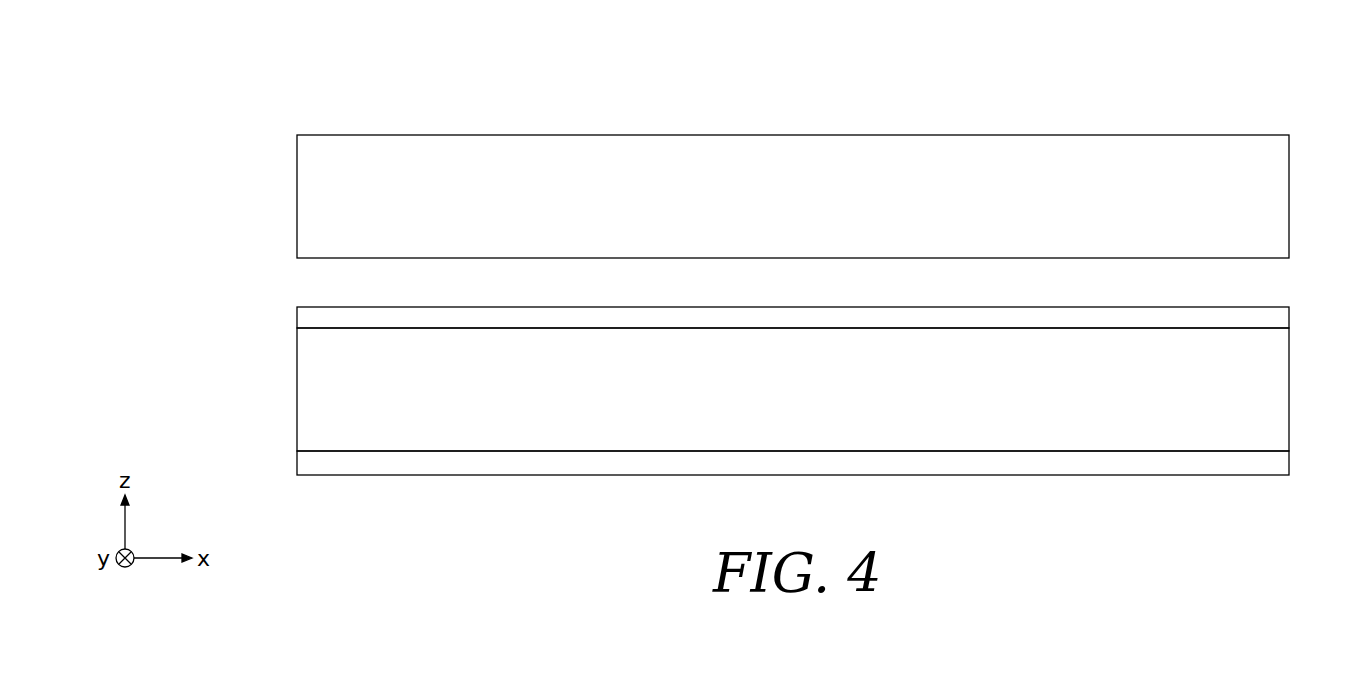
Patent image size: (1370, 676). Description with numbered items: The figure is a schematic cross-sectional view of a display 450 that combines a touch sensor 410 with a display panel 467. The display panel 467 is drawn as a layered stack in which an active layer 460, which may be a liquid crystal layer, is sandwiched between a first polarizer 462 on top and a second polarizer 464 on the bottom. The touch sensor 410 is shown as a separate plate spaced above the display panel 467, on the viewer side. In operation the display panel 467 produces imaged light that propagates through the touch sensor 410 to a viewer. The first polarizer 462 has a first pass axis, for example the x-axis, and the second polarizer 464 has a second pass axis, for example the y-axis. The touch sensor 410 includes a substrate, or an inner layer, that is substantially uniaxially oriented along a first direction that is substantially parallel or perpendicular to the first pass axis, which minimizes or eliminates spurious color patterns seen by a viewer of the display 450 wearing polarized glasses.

The display 450 is at (292, 65).
The touch sensor 410 is at (297, 204).
The first polarizer 462 is at (310, 320).
The active layer 460 is at (310, 393).
The second polarizer 464 is at (310, 467).
The display panel 467 is at (783, 393).